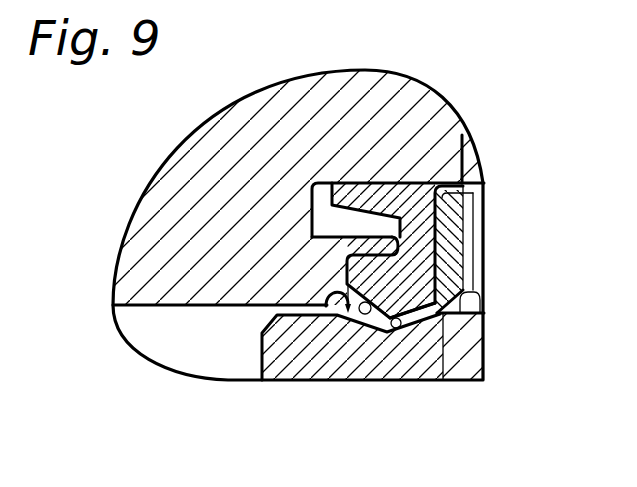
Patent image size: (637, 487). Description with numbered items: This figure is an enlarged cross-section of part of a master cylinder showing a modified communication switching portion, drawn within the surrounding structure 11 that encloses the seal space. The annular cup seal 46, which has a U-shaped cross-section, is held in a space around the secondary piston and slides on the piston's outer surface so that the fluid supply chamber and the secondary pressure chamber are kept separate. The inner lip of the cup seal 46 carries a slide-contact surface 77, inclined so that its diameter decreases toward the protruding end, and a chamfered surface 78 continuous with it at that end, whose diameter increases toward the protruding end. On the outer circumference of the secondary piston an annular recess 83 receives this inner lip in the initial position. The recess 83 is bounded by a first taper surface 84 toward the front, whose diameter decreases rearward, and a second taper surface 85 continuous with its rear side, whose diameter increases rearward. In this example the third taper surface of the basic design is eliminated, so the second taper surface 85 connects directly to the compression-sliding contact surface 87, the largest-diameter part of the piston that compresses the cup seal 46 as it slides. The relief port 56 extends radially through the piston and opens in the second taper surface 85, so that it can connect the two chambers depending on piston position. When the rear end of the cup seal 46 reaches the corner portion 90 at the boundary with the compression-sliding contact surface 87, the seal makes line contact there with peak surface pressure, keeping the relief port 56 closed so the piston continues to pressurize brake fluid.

The housing 11 is at (432, 102).
The cup seal 46 is at (425, 242).
The relief port 56 is at (438, 362).
The slide-contact surface 77 is at (426, 322).
The chamfered surface 78 is at (377, 330).
The recess 83 is at (330, 300).
The first taper surface 84 is at (364, 314).
The second taper surface 85 is at (395, 328).
The compression-sliding contact surface 87 is at (470, 303).
The corner portion 90 is at (468, 292).